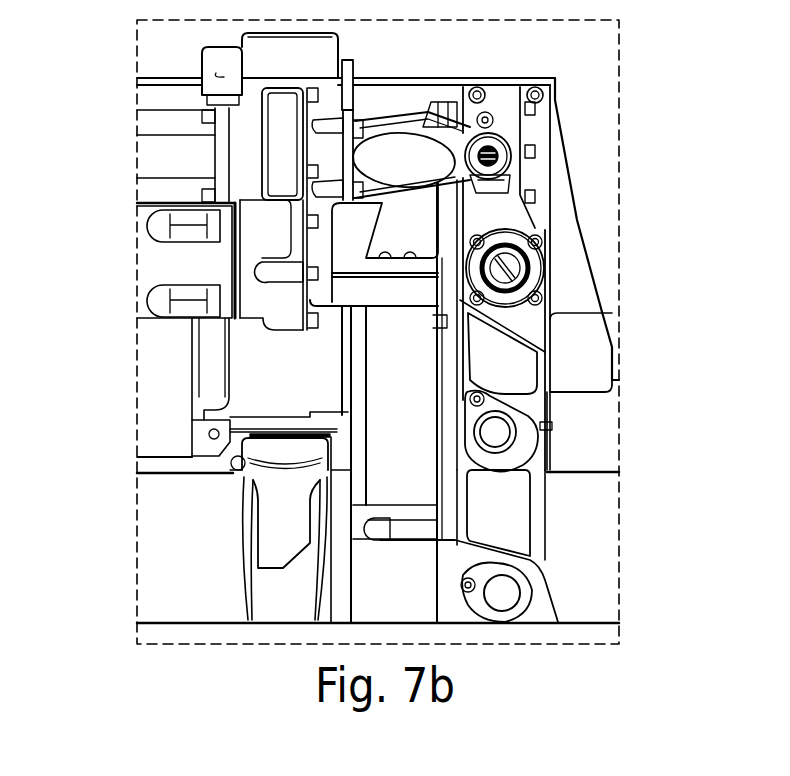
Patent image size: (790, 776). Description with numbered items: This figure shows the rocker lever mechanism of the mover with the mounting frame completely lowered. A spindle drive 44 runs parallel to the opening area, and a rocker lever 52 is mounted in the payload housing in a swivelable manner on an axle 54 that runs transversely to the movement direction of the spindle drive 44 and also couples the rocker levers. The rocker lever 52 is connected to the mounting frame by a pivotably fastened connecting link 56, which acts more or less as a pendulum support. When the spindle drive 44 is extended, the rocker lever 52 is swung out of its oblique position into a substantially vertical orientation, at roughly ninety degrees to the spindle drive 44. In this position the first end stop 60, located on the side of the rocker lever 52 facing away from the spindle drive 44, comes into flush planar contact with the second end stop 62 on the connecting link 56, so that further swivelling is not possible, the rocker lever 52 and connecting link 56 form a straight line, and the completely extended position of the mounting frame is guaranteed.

The spindle drive 44 is at (153, 125).
The rocker lever 52 is at (612, 313).
The axle 54 is at (512, 238).
The connecting link 56 is at (518, 527).
The first end stop 60 is at (556, 422).
The second end stop 62 is at (556, 435).